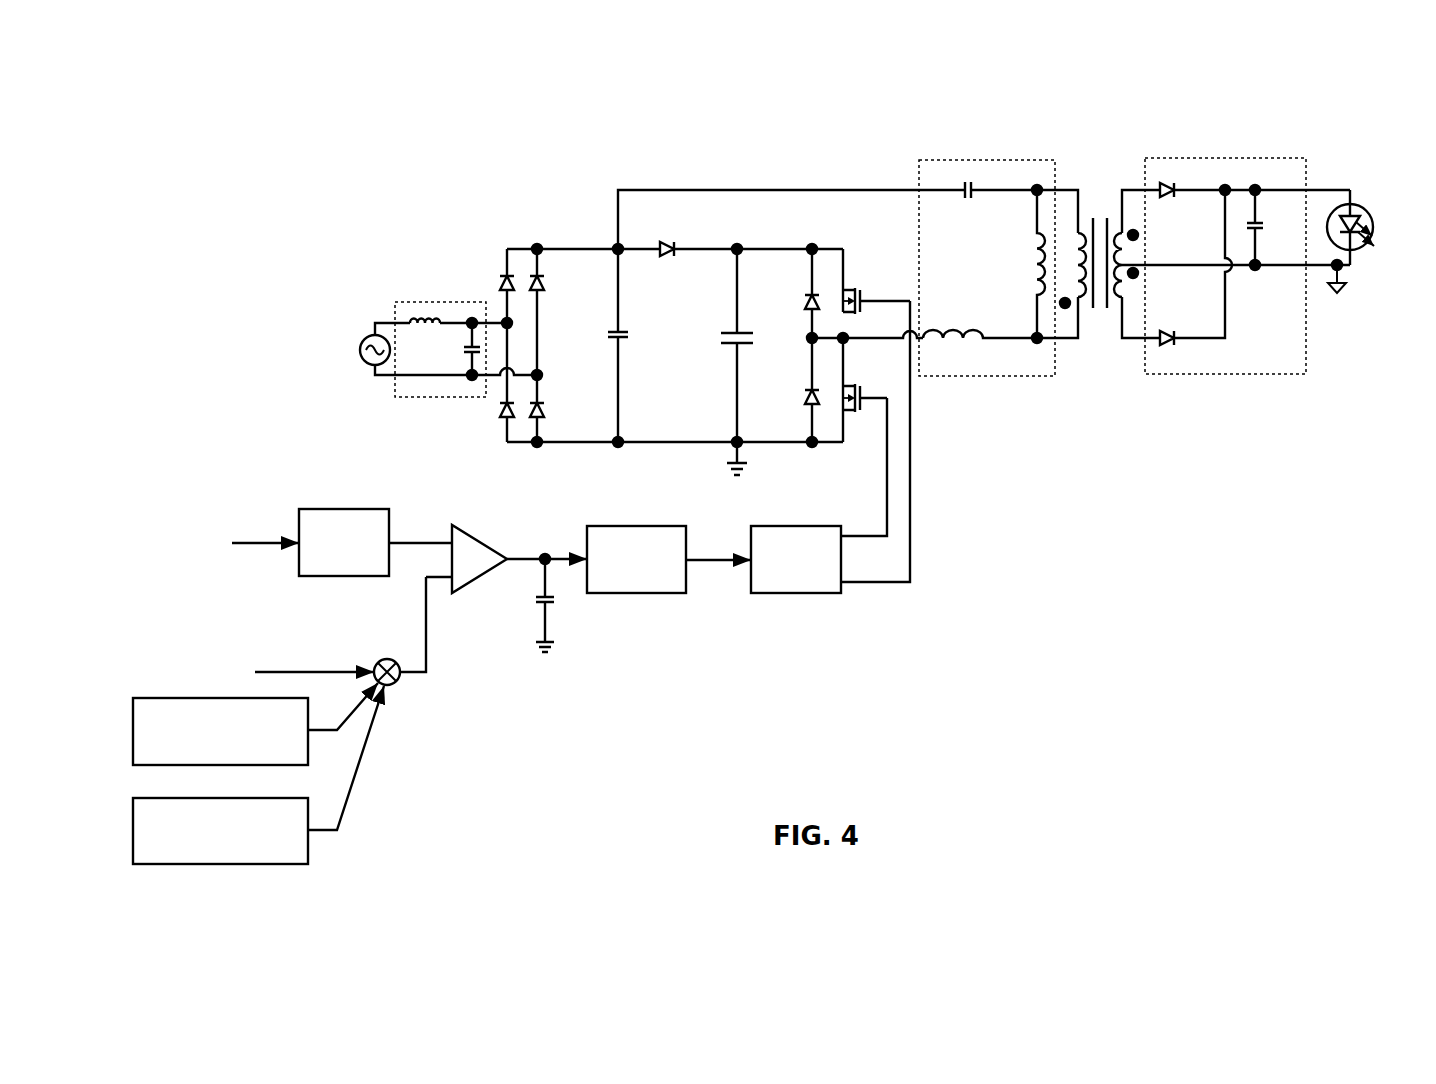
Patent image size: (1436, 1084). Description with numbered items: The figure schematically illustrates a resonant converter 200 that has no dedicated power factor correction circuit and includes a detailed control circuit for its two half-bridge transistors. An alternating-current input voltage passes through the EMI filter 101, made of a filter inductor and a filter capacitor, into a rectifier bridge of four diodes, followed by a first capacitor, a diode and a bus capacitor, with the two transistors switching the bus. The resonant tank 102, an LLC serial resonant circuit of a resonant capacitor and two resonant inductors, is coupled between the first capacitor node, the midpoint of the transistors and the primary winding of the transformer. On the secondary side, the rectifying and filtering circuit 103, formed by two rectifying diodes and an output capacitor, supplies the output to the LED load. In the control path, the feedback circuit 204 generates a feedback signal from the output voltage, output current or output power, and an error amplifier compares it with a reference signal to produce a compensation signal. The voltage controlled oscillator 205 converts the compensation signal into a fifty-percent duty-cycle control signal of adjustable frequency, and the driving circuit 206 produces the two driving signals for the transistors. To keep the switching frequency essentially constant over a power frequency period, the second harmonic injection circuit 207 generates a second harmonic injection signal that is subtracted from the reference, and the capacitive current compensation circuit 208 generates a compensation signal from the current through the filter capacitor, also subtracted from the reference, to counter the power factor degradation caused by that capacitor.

The resonant converter 200 is at (1335, 124).
The EMI filter 101 is at (408, 398).
The resonant tank 102 is at (960, 377).
The rectifying and filtering circuit 103 is at (1153, 375).
The feedback circuit 204 is at (310, 577).
The voltage controlled oscillator 205 is at (613, 594).
The driving circuit 206 is at (761, 594).
The second harmonic injection circuit 207 is at (178, 766).
The capacitive current compensation circuit 208 is at (178, 865).